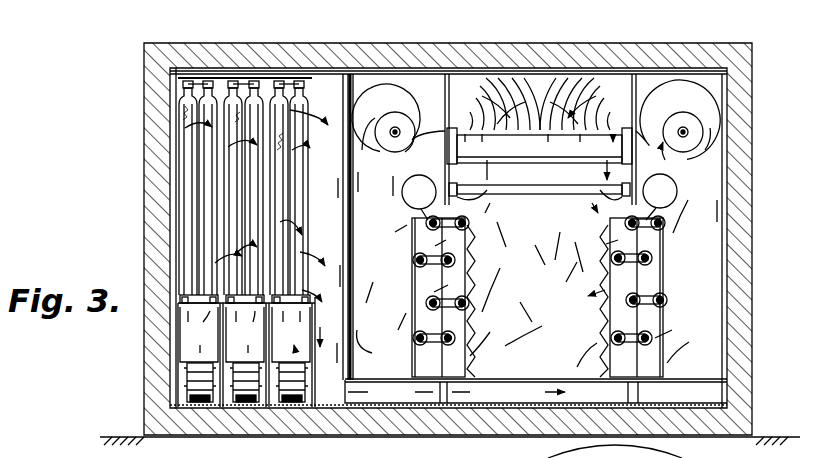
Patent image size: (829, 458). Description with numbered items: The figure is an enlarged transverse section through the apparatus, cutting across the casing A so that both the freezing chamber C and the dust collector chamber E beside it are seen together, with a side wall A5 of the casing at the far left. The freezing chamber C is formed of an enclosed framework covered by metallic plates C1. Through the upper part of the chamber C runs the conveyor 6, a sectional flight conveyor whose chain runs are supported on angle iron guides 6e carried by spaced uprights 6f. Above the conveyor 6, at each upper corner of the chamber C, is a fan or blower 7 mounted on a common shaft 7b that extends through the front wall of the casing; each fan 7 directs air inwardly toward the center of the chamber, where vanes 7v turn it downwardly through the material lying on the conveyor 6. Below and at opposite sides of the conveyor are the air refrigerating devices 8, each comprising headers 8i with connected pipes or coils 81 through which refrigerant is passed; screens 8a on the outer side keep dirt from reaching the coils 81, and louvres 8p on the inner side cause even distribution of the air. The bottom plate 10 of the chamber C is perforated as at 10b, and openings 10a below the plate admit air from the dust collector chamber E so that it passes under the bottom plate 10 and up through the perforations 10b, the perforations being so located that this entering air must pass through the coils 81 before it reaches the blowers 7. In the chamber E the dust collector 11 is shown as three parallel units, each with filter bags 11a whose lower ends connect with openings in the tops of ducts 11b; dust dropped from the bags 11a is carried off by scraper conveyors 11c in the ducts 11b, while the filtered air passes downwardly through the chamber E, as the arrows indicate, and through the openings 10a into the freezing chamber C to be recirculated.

The casing A is at (758, 170).
The casing side wall A5 is at (172, 216).
The dust collector chamber E is at (254, 90).
The dust collector 11 is at (319, 345).
The filter bags 11a is at (212, 234).
The ducts 11b is at (246, 351).
The scraper conveyors 11c is at (192, 398).
The freezing chamber C is at (361, 82).
The metallic plates C1 is at (728, 88).
The fans or blowers 7 is at (536, 136).
The common shafts 7b is at (394, 131).
The vanes 7v is at (539, 110).
The conveyor 6 is at (537, 200).
The angle iron guides 6e is at (541, 188).
The uprights 6f is at (540, 206).
The air refrigerating devices 8 is at (412, 221).
The coil inlet header 8i is at (539, 191).
The pipes or coils 81 is at (540, 280).
The screens 8a is at (418, 305).
The louvres 8p is at (470, 316).
The bottom plate 10 is at (403, 357).
The openings 10a is at (345, 398).
The perforations 10b is at (512, 386).